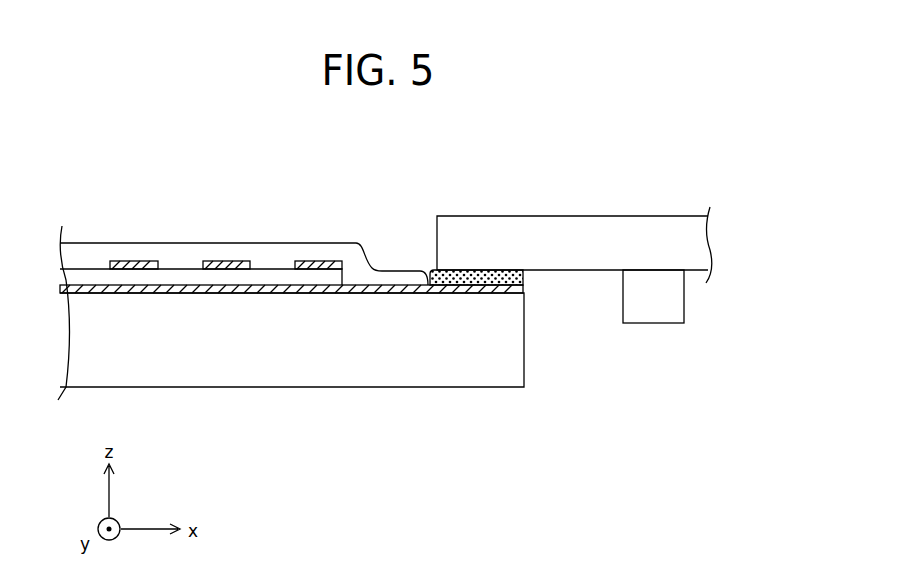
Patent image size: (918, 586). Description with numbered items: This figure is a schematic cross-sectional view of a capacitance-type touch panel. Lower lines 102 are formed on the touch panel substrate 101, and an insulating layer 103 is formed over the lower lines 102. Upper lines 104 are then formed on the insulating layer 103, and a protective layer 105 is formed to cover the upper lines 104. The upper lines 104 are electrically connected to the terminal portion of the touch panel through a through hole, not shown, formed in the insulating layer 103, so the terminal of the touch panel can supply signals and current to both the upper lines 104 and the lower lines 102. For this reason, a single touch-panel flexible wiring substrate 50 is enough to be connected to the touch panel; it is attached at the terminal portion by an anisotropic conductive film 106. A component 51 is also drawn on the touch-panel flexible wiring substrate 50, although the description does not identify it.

The touch-panel flexible wiring substrate 50 is at (581, 216).
The driver IC 51 is at (655, 303).
The touch panel substrate 101 is at (305, 376).
The lower lines 102 is at (86, 289).
The insulating layer 103 is at (169, 277).
The upper lines 104 is at (240, 261).
The protective layer 105 is at (309, 243).
The anisotropic conductive film 106 is at (526, 278).